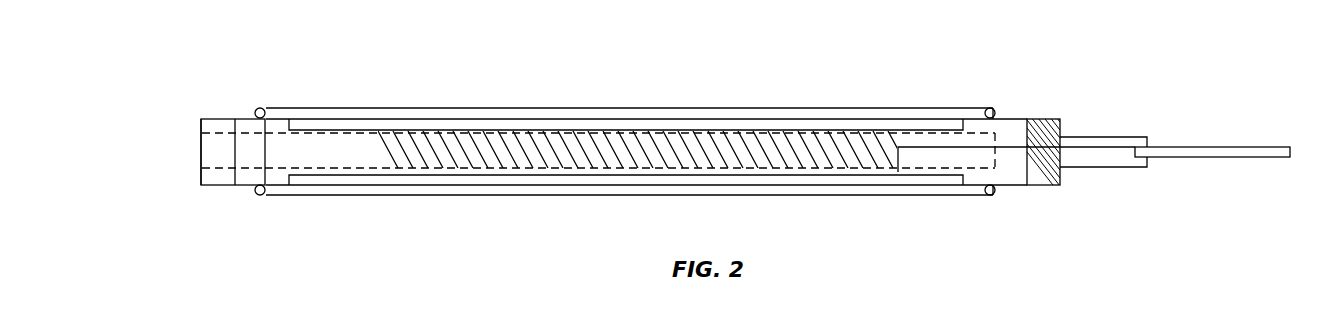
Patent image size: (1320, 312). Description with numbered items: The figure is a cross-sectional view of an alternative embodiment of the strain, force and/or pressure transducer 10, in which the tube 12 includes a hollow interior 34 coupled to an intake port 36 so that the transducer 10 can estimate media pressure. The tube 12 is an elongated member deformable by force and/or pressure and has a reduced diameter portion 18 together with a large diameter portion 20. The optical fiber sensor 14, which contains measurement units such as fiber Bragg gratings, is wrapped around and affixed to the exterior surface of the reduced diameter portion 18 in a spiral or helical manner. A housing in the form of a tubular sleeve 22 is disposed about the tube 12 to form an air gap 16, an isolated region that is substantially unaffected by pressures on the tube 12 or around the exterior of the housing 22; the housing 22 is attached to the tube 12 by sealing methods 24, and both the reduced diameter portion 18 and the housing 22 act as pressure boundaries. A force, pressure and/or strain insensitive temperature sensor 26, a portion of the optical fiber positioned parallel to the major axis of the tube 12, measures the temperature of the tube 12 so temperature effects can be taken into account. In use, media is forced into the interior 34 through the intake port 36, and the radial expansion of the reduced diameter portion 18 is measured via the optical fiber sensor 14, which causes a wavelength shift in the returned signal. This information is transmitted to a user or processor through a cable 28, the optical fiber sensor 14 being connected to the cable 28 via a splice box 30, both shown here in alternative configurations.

The transducer 10 is at (240, 52).
The tube 12 is at (1012, 173).
The optical fiber sensor 14 is at (647, 150).
The air gap 16 is at (367, 124).
The reduced diameter portion 18 is at (345, 155).
The large diameter portion 20 is at (245, 187).
The housing 22 is at (602, 108).
The mechanical sealing methods 24 is at (262, 108).
The temperature sensor 26 is at (913, 147).
The cable 28 is at (1233, 147).
The splice box 30 is at (1122, 137).
The hollow interior 34 is at (218, 133).
The intake port 36 is at (201, 153).